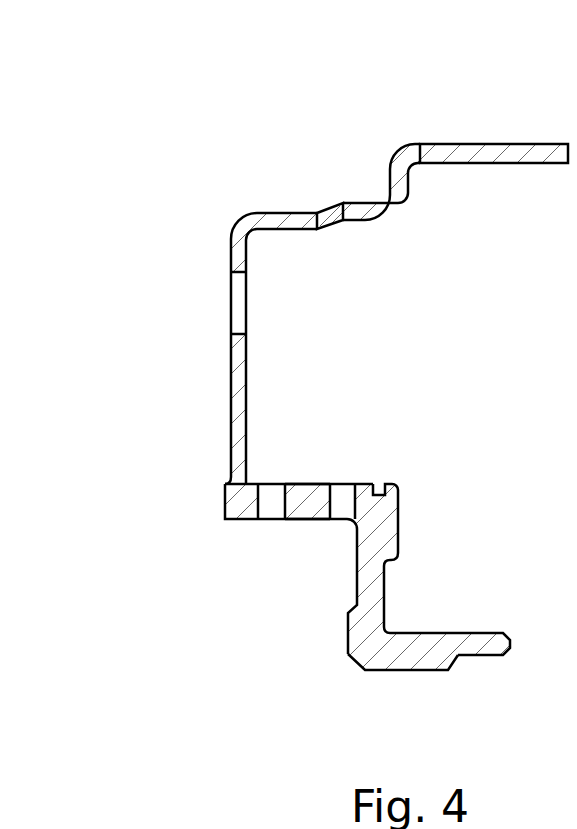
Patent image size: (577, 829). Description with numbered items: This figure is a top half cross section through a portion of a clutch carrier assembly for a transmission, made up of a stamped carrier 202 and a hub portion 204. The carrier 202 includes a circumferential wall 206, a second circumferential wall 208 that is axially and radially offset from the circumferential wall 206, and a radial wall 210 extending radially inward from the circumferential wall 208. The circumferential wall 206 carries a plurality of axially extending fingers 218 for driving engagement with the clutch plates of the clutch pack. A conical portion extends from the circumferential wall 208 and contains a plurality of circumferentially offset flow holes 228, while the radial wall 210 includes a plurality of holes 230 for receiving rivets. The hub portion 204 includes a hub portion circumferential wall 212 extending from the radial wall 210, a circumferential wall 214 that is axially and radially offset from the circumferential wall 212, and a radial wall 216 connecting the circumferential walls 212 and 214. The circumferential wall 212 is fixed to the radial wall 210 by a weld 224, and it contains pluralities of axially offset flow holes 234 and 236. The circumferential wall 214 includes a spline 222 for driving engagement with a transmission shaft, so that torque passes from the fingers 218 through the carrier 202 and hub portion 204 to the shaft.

The stamped carrier 202 is at (236, 263).
The hub portion 204 is at (235, 508).
The circumferential wall 206 is at (413, 156).
The circumferential wall 208 is at (280, 222).
The radial wall 210 is at (237, 392).
The hub portion circumferential wall 212 is at (312, 505).
The circumferential wall 214 is at (403, 647).
The radial wall 216 is at (375, 602).
The axially extending fingers 218 is at (500, 153).
The spline 222 is at (443, 662).
The weld 224 is at (228, 478).
The flow holes 228 is at (328, 214).
The holes 230 is at (238, 308).
The flow holes 234 is at (272, 495).
The flow holes 236 is at (343, 495).